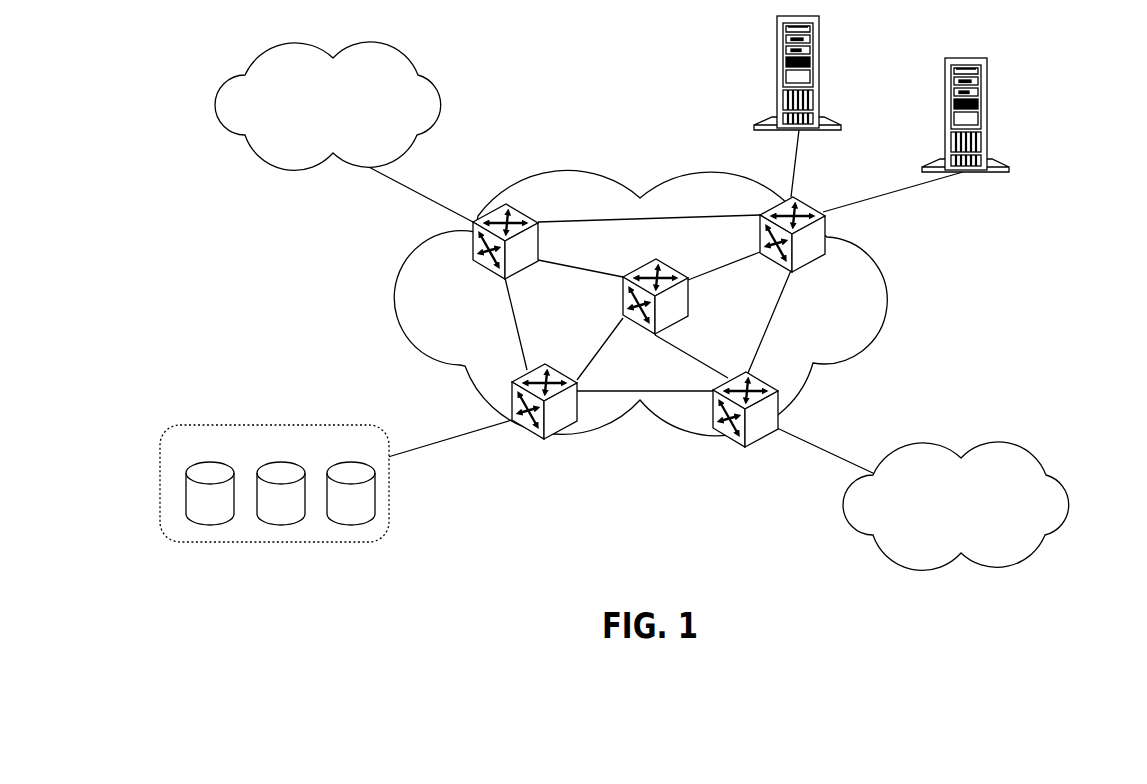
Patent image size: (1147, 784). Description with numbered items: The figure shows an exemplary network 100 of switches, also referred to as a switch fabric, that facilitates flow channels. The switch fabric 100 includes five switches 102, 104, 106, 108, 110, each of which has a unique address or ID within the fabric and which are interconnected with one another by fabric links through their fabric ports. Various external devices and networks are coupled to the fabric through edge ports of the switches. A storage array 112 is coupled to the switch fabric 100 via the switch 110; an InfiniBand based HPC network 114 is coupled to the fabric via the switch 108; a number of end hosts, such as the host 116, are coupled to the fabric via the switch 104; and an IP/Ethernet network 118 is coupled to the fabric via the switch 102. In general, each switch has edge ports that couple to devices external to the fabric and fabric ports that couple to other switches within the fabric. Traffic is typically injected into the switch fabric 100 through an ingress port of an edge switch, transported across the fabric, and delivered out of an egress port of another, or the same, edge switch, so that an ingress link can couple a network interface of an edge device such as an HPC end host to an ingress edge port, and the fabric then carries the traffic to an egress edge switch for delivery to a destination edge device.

The network 100 is at (887, 300).
The switch 102 is at (745, 448).
The switch 104 is at (826, 253).
The switch 106 is at (653, 262).
The switch 108 is at (474, 262).
The switch 110 is at (541, 362).
The storage array 112 is at (367, 543).
The InfiniBand based HPC network 114 is at (213, 105).
The host 116 is at (1010, 168).
The IP/Ethernet network 118 is at (1078, 503).